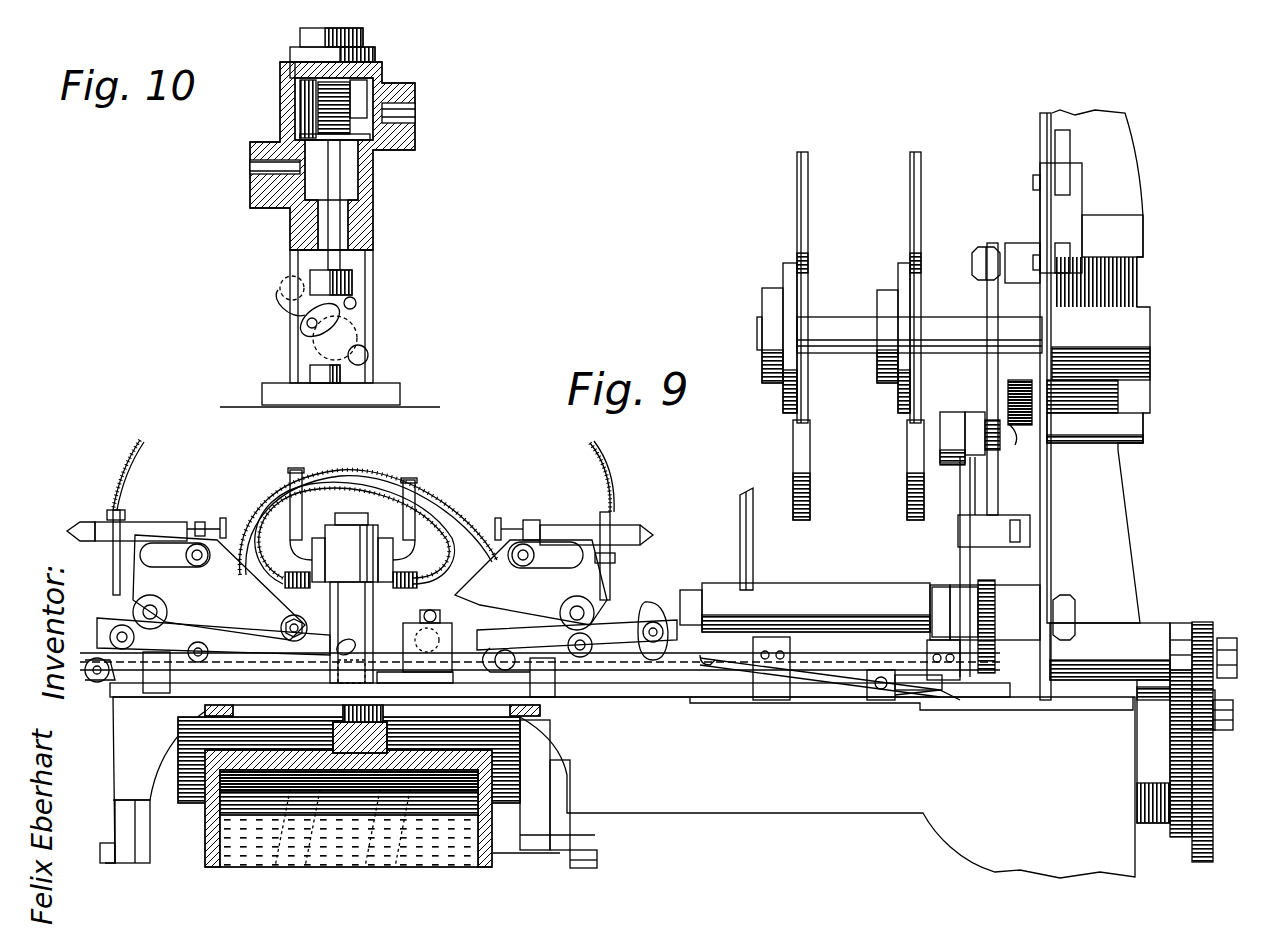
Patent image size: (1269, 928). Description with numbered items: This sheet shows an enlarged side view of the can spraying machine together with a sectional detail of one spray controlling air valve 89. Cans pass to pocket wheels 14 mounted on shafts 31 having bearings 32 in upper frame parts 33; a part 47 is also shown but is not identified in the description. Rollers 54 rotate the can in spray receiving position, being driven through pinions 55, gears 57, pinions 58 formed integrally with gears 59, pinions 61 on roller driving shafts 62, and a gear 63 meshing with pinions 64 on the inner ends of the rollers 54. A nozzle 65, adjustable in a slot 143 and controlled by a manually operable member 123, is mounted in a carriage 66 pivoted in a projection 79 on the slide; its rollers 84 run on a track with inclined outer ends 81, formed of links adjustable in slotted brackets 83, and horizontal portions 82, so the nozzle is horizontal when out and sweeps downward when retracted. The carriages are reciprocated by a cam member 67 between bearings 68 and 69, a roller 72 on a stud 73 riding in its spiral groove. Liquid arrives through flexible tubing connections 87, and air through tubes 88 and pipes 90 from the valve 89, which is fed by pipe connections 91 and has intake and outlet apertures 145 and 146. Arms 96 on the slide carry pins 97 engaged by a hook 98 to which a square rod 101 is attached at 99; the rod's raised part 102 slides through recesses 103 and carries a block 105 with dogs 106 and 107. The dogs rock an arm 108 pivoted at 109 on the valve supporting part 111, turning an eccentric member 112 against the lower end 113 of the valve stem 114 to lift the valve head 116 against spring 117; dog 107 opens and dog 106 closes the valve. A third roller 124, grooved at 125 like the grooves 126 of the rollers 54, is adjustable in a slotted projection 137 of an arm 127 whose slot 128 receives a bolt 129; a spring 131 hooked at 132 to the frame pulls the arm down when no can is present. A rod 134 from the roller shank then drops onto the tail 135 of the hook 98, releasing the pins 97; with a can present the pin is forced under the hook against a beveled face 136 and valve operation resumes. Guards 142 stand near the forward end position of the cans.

In FIG. 9, the turrets or pocket wheels 14 is at (910, 217).
In FIG. 9, the shafts 31 is at (850, 352).
In FIG. 9, the bearings 32 is at (1118, 325).
In FIG. 9, the upper frame parts 33 is at (1047, 390).
In FIG. 9, the upright bar 47 is at (1040, 218).
In FIG. 9, the rollers 54 is at (820, 596).
In FIG. 9, the pinions 55 is at (1175, 822).
In FIG. 9, the gears 57 is at (1185, 840).
In FIG. 9, the pinions 58 is at (1213, 700).
In FIG. 9, the gears 59 is at (1205, 730).
In FIG. 9, the pinions 61 is at (1222, 638).
In FIG. 9, the roller driving shafts 62 is at (1176, 640).
In FIG. 9, the gear 63 is at (975, 700).
In FIG. 9, the pinions 64 is at (986, 590).
In FIG. 9, the nozzles 65 is at (130, 530).
In FIG. 9, the carriages 66 is at (472, 560).
In FIG. 9, the cam member 67 is at (597, 836).
In FIG. 9, the bearing 68 is at (597, 868).
In FIG. 9, the bearing 69 is at (125, 820).
In FIG. 9, the roller 72 is at (492, 760).
In FIG. 9, the stud 73 is at (517, 712).
In FIG. 9, the projections 79 is at (300, 614).
In FIG. 9, the inclined outer ends of track 81 is at (605, 632).
In FIG. 9, the horizontal portions of track 82 is at (225, 648).
In FIG. 9, the slotted brackets 83 is at (662, 612).
In FIG. 9, the rollers 84 is at (133, 612).
In FIG. 9, the flexible tubing connections 87 is at (128, 470).
In FIG. 9, the tubes 88 is at (325, 480).
In FIG. 10, the air valves 89 is at (375, 178).
In FIG. 9, the air valves 89 is at (355, 540).
In FIG. 9, the pipes 90 is at (113, 575).
In FIG. 9, the pipe connections 91 is at (410, 505).
In FIG. 9, the arms 96 is at (120, 690).
In FIG. 9, the pins 97 is at (1045, 216).
In FIG. 9, the hook 98 is at (88, 660).
In FIG. 9, the attachment point 99 is at (878, 700).
In FIG. 9, the square rod 101 is at (1065, 600).
In FIG. 9, the raised part 102 is at (470, 655).
In FIG. 9, the recesses 103 is at (540, 555).
In FIG. 9, the block 105 is at (405, 650).
In FIG. 9, the dog 106 is at (420, 612).
In FIG. 9, the lower dog 107 is at (492, 672).
In FIG. 10, the arm 108 is at (290, 300).
In FIG. 9, the arm 108 is at (338, 648).
In FIG. 10, the pivot 109 is at (342, 330).
In FIG. 10, the valve supporting part 111 is at (367, 318).
In FIG. 10, the eccentric member 112 is at (312, 323).
In FIG. 9, the eccentric member 112 is at (338, 652).
In FIG. 10, the lower end of valve stem 113 is at (330, 290).
In FIG. 10, the valve stem 114 is at (330, 228).
In FIG. 10, the valve head 116 is at (392, 84).
In FIG. 10, the spring 117 is at (372, 62).
In FIG. 9, the manually operable controlling member 123 is at (224, 520).
In FIG. 9, the third roller 124 is at (947, 418).
In FIG. 9, the groove 125 is at (955, 463).
In FIG. 9, the grooves 126 is at (950, 590).
In FIG. 9, the arm 127 is at (987, 340).
In FIG. 9, the slot 128 is at (980, 285).
In FIG. 9, the bolt 129 is at (990, 255).
In FIG. 9, the spring 131 is at (1047, 405).
In FIG. 9, the hook 132 is at (1025, 432).
In FIG. 9, the rod 134 is at (967, 497).
In FIG. 9, the tail 135 is at (958, 700).
In FIG. 9, the beveled face 136 is at (703, 657).
In FIG. 9, the slotted projection 137 is at (985, 500).
In FIG. 9, the guards 142 is at (755, 480).
In FIG. 9, the slots 143 is at (175, 545).
In FIG. 10, the intake aperture 145 is at (418, 112).
In FIG. 10, the outlet aperture 146 is at (262, 185).